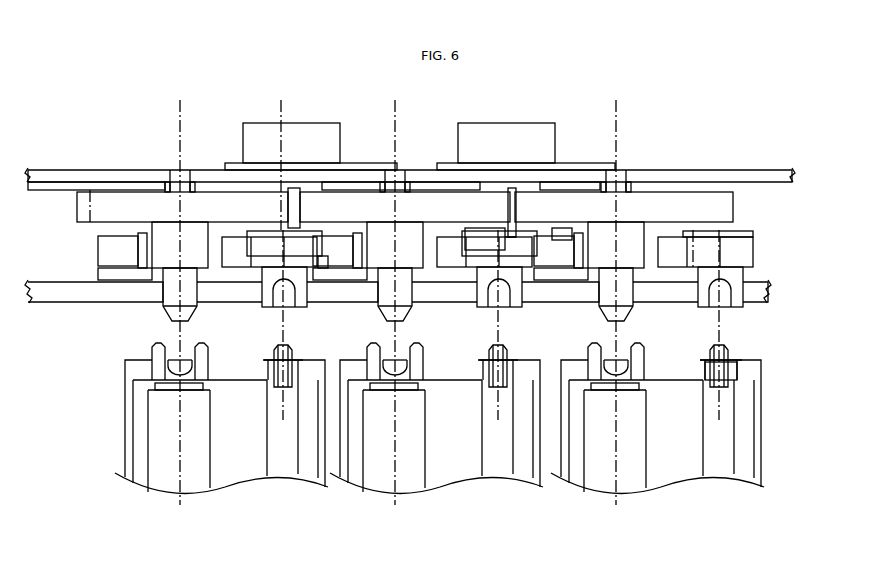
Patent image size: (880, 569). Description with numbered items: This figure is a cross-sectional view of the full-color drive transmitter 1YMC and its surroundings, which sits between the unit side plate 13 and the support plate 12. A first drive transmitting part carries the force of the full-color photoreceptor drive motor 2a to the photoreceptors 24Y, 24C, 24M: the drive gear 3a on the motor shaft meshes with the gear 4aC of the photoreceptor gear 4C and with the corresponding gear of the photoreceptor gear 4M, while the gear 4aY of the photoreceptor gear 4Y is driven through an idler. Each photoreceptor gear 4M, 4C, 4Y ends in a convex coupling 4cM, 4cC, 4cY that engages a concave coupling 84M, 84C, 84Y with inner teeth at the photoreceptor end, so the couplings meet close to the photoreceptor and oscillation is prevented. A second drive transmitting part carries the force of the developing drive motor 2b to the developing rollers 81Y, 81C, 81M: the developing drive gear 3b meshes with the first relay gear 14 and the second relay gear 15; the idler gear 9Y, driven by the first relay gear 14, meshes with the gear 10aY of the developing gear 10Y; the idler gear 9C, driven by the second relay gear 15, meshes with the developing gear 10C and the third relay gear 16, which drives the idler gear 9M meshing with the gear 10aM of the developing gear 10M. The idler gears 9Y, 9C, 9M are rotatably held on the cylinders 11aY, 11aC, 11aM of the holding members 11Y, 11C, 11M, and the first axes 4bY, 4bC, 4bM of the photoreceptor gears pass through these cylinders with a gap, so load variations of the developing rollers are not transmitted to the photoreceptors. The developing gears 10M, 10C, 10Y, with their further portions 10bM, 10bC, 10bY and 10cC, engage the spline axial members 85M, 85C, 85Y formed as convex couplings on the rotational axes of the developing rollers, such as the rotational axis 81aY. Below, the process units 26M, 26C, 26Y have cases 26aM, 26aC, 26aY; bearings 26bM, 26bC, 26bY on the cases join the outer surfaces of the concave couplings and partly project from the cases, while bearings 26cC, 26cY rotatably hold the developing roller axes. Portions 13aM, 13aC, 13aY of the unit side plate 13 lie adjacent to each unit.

The full-color drive transmitter 1YMC is at (797, 190).
The full-color photoreceptor drive motor 2a is at (304, 123).
The developing drive motor 2b is at (520, 123).
The drive gear 3a is at (296, 205).
The developing drive gear 3b is at (514, 230).
The photoreceptor gear 4M is at (118, 186).
The photoreceptor gear 4C is at (437, 187).
The photoreceptor gear 4Y is at (742, 190).
The gear 4aC is at (367, 200).
The gear 4aY is at (735, 205).
The first axis 4bM is at (165, 228).
The first axis 4bC is at (403, 245).
The first axis 4bY is at (612, 245).
The convex coupling 4cM is at (165, 315).
The convex coupling 4cC is at (380, 315).
The convex coupling 4cY is at (632, 315).
The idler gear 9M is at (97, 249).
The idler gear 9C is at (335, 266).
The idler gear 9Y is at (680, 246).
The developing gear 10M is at (250, 299).
The developing gear 10C is at (535, 300).
The developing gear 10Y is at (756, 250).
The gear 10aM is at (300, 262).
The gear 10aY is at (738, 236).
The positioning pin housing 10bM is at (283, 300).
The positioning pin housing 10bC is at (500, 303).
The positioning pin housing 10bY is at (725, 302).
The positioning member part 10cC is at (515, 267).
The holding member 11M is at (97, 274).
The holding member 11C is at (372, 272).
The holding member 11Y is at (560, 280).
The cylinder 11aM is at (142, 236).
The cylinder 11aC is at (358, 236).
The cylinder 11aY is at (626, 236).
The support plate 12 is at (688, 172).
The unit side plate 13 is at (758, 283).
The rail portion 13aM is at (132, 302).
The rail portion 13aC is at (430, 302).
The rail portion 13aY is at (645, 302).
The first relay gear 14 is at (562, 230).
The second relay gear 15 is at (488, 230).
The third relay gear 16 is at (324, 268).
The photoreceptor 24M is at (212, 456).
The photoreceptor 24C is at (427, 456).
The photoreceptor 24Y is at (648, 456).
The process unit 26M is at (124, 421).
The process unit 26C is at (445, 482).
The process unit 26Y is at (765, 421).
The case 26aM is at (240, 382).
The case 26aC is at (440, 385).
The case 26aY is at (665, 382).
The bearing 26bM is at (210, 355).
The bearing 26bC is at (425, 355).
The bearing 26bY is at (648, 355).
The bearing 26cC is at (495, 375).
The bearing 26cY is at (745, 366).
The developing roller 81M is at (266, 430).
The developing roller 81C is at (481, 436).
The developing roller 81Y is at (702, 430).
The rotational axis 81aY is at (740, 378).
The concave coupling 84M is at (178, 365).
The concave coupling 84C is at (393, 365).
The concave coupling 84Y is at (613, 365).
The spline axial member 85M is at (300, 349).
The spline axial member 85C is at (513, 349).
The spline axial member 85Y is at (735, 349).